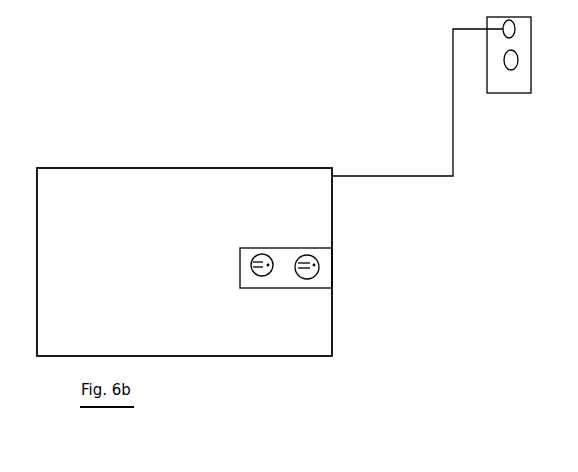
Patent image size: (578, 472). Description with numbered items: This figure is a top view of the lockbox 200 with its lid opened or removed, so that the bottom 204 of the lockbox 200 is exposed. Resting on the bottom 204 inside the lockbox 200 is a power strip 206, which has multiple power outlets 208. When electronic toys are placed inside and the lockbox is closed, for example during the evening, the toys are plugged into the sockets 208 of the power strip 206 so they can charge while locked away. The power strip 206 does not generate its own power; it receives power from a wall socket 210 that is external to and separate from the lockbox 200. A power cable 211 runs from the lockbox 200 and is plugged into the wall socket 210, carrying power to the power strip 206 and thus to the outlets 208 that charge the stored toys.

The lockbox 200 is at (296, 228).
The bottom 204 is at (148, 176).
The power strip 206 is at (315, 298).
The power outlets 208 is at (262, 276).
The wall socket 210 is at (523, 89).
The power cable 211 is at (428, 173).